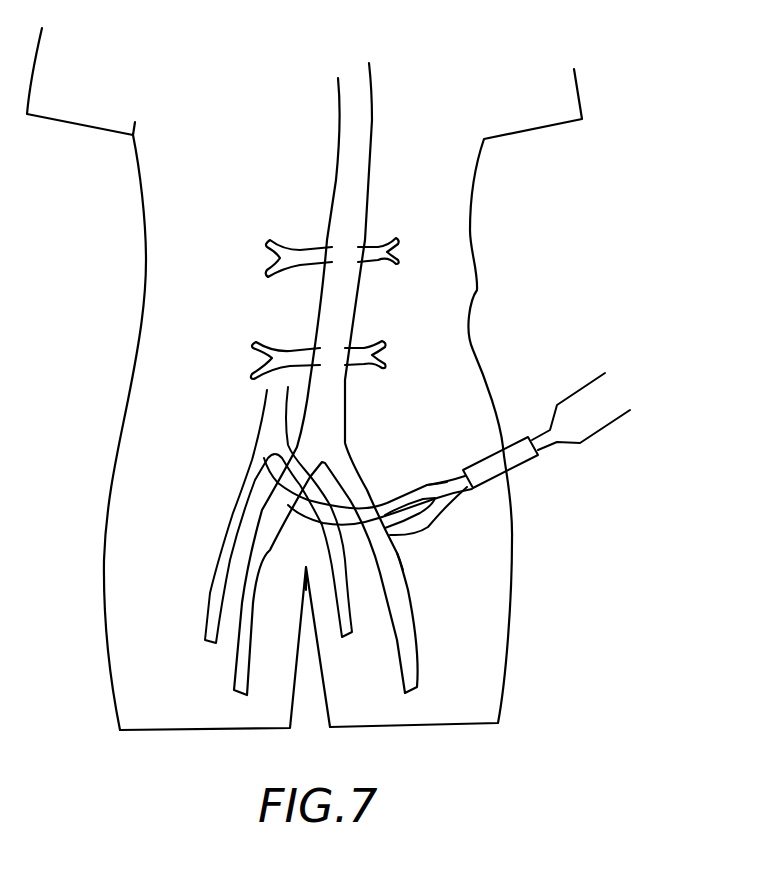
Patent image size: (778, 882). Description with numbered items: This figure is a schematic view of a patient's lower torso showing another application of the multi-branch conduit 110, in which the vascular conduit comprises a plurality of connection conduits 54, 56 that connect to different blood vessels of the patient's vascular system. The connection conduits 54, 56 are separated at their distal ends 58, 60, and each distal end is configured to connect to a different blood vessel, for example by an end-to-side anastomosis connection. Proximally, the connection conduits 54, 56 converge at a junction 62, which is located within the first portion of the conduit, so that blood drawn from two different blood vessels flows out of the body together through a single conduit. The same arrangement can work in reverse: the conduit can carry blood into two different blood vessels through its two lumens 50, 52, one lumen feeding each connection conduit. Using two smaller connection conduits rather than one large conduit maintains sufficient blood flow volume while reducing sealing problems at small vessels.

The lumen 50 is at (395, 499).
The lumen 52 is at (443, 512).
The connection conduit 54 is at (308, 515).
The connection conduit 56 is at (417, 537).
The distal end 58 is at (300, 503).
The distal end 60 is at (408, 553).
The junction 62 is at (427, 483).
The conduit 110 is at (583, 372).